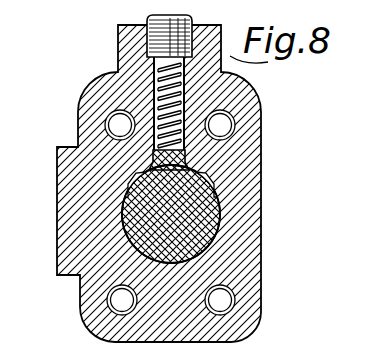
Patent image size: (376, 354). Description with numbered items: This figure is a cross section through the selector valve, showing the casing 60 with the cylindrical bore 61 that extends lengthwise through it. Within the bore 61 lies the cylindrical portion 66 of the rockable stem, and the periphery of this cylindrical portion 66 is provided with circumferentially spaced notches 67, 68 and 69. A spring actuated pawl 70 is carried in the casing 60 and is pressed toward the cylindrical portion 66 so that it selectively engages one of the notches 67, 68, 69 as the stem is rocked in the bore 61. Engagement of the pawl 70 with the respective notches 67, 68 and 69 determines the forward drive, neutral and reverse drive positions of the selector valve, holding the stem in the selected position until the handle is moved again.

The casing 60 is at (118, 44).
The cylindrical bore 61 is at (212, 244).
The cylindrical portion 66 is at (171, 214).
The notch 67 is at (206, 184).
The notch 68 is at (200, 171).
The notch 69 is at (130, 190).
The spring actuated pawl 70 is at (222, 74).